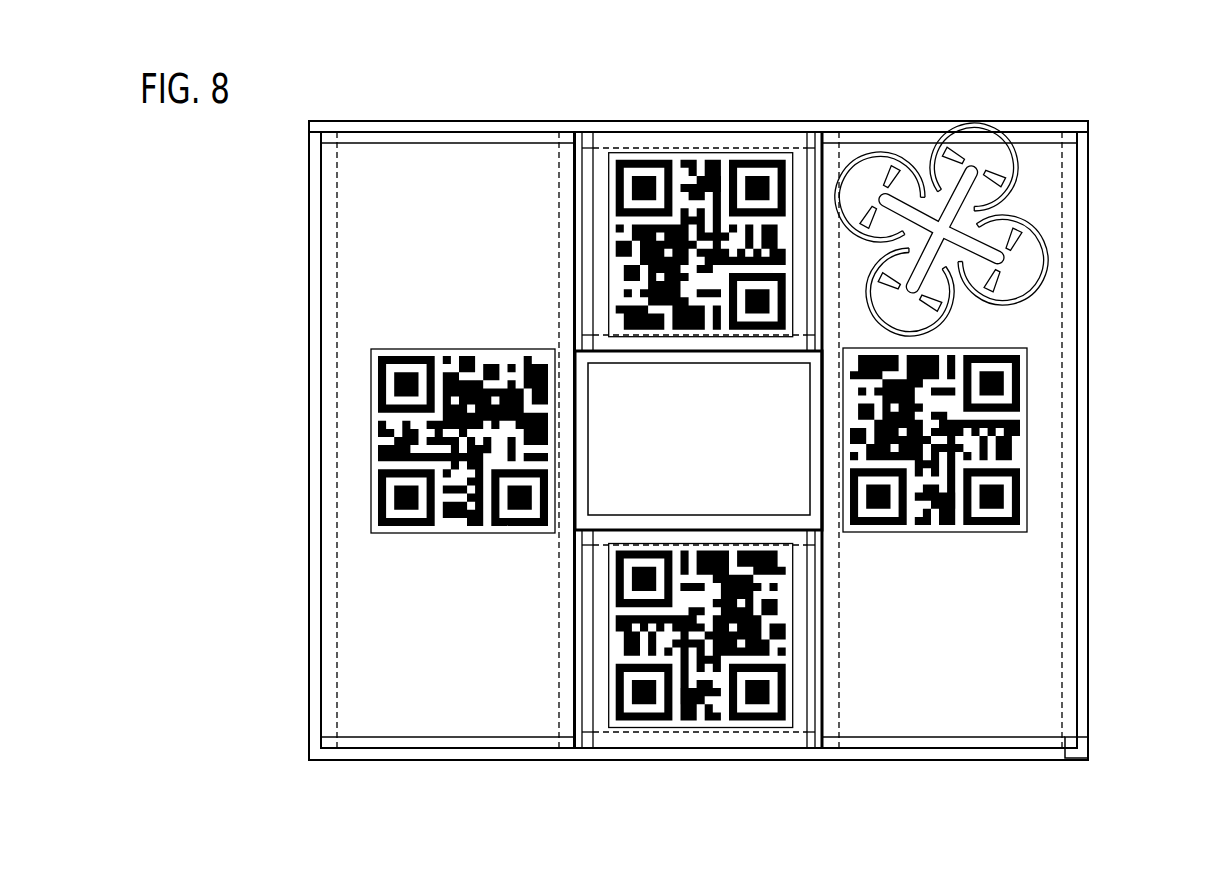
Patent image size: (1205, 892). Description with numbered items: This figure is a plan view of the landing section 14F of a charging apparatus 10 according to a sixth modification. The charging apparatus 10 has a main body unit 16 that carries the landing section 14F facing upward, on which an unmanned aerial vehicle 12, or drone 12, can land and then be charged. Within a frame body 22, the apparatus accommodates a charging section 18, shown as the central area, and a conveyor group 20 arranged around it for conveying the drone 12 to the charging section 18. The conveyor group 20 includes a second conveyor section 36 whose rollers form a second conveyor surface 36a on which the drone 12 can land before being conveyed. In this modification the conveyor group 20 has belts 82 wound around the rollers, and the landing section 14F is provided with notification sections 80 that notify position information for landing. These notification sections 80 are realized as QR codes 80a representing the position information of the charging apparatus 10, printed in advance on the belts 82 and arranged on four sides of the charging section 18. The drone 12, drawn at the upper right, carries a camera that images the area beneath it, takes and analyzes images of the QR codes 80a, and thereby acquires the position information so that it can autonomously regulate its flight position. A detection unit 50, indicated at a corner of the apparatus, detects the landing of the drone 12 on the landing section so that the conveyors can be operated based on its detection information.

The charging apparatus 10 is at (182, 175).
The unmanned aerial vehicle 12 is at (920, 144).
The landing section 14F is at (309, 244).
The main body unit 16 is at (305, 202).
The charging section 18 is at (836, 543).
The conveyor group 20 is at (459, 128).
The frame body 22 is at (321, 313).
The second conveyor section 36 is at (700, 440).
The second conveyor surface 36a is at (337, 503).
The detection unit 50 is at (1080, 748).
The notification section 80 is at (700, 439).
The QR code 80a is at (643, 152).
The belt 82 is at (755, 142).